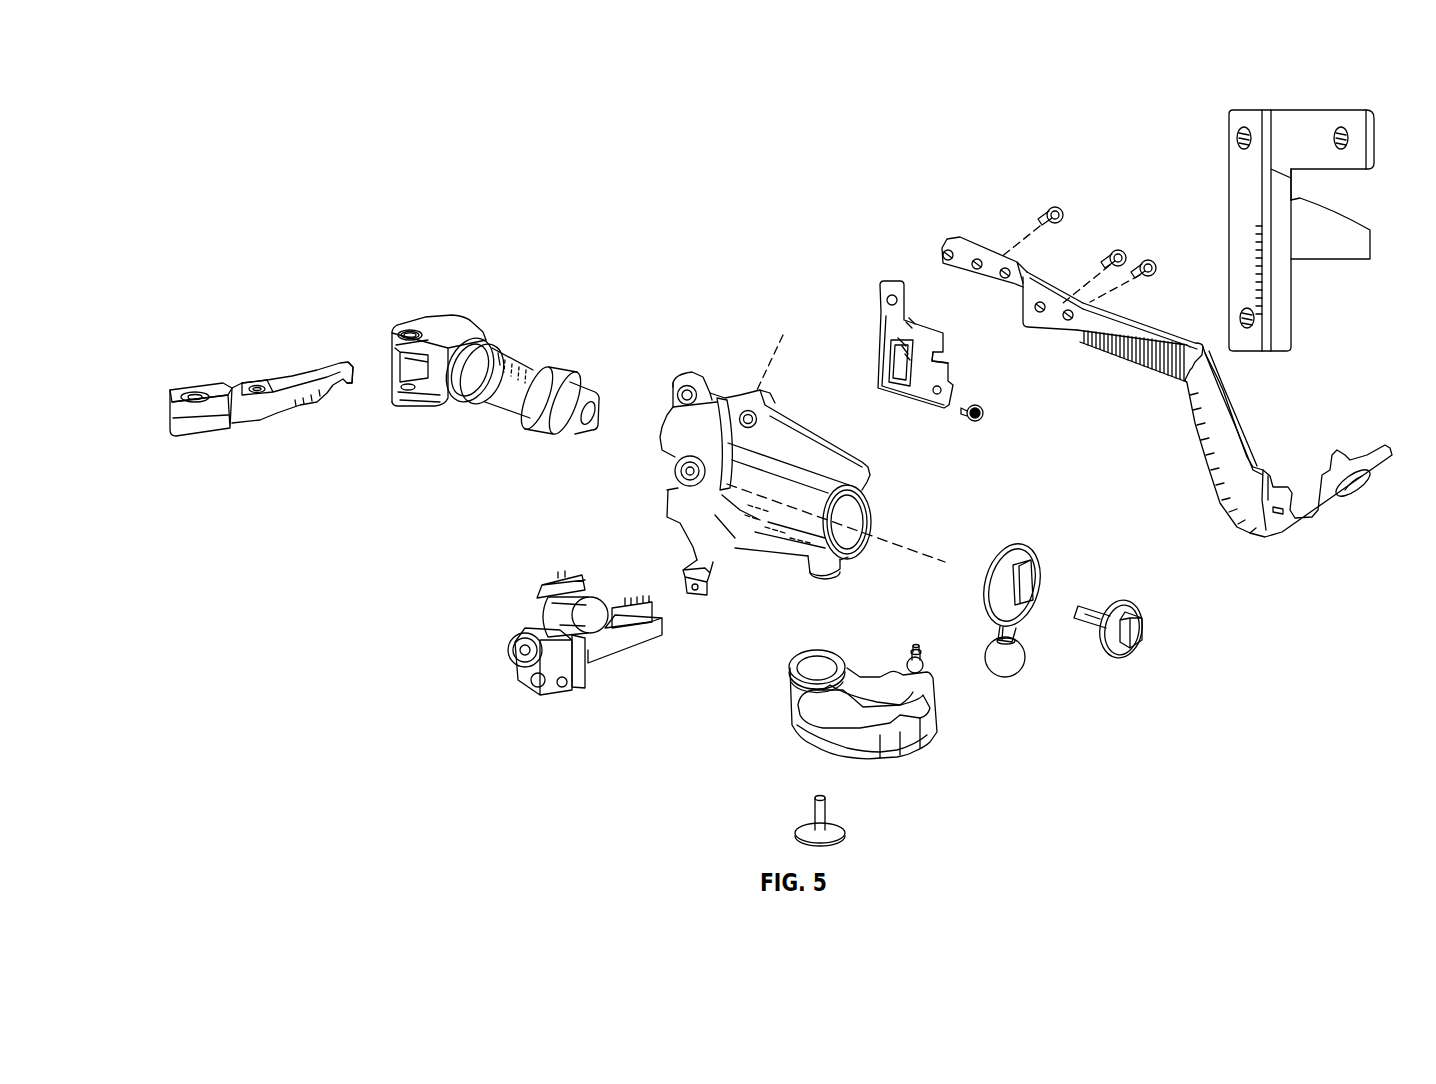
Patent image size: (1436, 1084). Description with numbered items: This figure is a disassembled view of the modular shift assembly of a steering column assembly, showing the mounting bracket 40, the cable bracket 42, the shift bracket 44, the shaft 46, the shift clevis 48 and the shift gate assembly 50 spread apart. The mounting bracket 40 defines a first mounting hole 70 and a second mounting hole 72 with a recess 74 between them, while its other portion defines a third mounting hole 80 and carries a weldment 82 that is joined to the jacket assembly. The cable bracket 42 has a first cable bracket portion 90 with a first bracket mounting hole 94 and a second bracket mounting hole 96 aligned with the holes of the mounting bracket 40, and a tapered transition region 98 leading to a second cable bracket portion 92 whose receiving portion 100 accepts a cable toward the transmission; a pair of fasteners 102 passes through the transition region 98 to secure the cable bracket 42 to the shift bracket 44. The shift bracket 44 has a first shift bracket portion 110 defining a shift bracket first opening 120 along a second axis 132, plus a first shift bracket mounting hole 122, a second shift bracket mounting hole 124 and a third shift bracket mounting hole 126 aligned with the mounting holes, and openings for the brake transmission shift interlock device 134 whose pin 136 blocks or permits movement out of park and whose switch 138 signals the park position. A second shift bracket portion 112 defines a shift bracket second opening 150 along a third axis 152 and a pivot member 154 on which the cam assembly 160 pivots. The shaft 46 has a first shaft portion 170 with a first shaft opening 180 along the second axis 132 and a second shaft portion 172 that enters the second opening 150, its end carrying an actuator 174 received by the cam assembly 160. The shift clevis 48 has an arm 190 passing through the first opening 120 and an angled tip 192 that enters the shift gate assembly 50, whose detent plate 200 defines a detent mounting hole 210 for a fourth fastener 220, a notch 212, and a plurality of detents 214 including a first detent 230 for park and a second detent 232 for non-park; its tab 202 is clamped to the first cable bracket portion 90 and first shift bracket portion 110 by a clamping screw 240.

The mounting bracket 40 is at (1295, 249).
The cable bracket 42 is at (1139, 343).
The shift bracket 44 is at (788, 464).
The shaft 46 is at (495, 366).
The shift clevis 48 is at (278, 398).
The shift gate assembly 50 is at (934, 356).
The first mounting hole 70 is at (1229, 133).
The second mounting hole 72 is at (1349, 134).
The recess 74 is at (1305, 146).
The third mounting hole 80 is at (1255, 326).
The weldment 82 is at (1348, 265).
The first cable bracket portion 90 is at (1045, 291).
The second cable bracket portion 92 is at (1151, 340).
The first bracket mounting hole 94 is at (940, 250).
The second bracket mounting hole 96 is at (1000, 276).
The transition region 98 is at (1037, 290).
The receiving portion 100 is at (1362, 456).
The pair of fasteners 102 is at (1146, 262).
The first shift bracket portion 110 is at (700, 440).
The second shift bracket portion 112 is at (795, 517).
The shift bracket first opening 120 is at (717, 390).
The first shift bracket mounting hole 122 is at (677, 388).
The second shift bracket mounting hole 124 is at (772, 407).
The third shift bracket mounting hole 126 is at (675, 470).
The second axis 132 is at (773, 348).
The brake transmission shift interlock device (BTSI) 134 is at (585, 629).
The pin 136 is at (606, 600).
The switch 138 is at (598, 582).
The shift bracket second opening 150 is at (873, 503).
The third axis 152 is at (933, 553).
The pivot member 154 is at (838, 572).
The cam assembly 160 is at (900, 762).
The first shaft portion 170 is at (433, 323).
The second shaft portion 172 is at (547, 407).
The actuator 174 is at (1027, 545).
The first shaft opening 180 is at (437, 383).
The arm 190 is at (297, 392).
The tip 192 is at (357, 380).
The detent plate 200 is at (882, 363).
The tab 202 is at (882, 290).
The detent mounting hole 210 is at (935, 396).
The notch 212 is at (948, 351).
The plurality of detents 214 is at (897, 335).
The fourth fastener 220 is at (984, 410).
The first detent 230 is at (888, 390).
The second detent 232 is at (913, 323).
The clamping screw 240 is at (1057, 208).